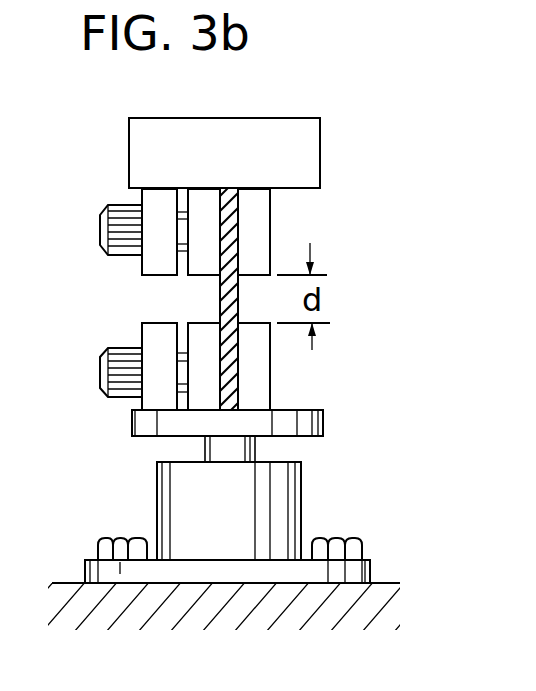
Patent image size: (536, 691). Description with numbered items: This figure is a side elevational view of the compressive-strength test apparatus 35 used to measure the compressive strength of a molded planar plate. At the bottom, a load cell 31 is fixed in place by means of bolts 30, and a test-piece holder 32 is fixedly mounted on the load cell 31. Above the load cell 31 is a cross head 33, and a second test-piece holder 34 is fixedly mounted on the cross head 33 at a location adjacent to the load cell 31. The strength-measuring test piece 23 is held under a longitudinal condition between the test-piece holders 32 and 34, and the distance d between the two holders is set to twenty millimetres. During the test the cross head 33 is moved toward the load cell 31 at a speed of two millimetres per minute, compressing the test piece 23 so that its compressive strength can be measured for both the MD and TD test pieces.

The strength-measuring test piece 23 is at (220, 292).
The bolts 30 is at (120, 538).
The load cell 31 is at (312, 492).
The test-piece holder 32 is at (137, 332).
The cross head 33 is at (130, 146).
The test-piece holder 34 is at (137, 267).
The compressive-strength test apparatus 35 is at (305, 222).